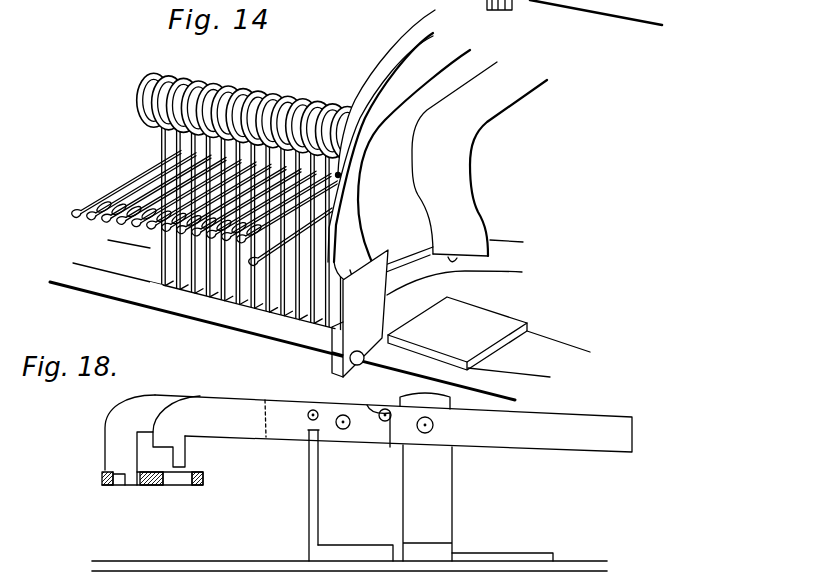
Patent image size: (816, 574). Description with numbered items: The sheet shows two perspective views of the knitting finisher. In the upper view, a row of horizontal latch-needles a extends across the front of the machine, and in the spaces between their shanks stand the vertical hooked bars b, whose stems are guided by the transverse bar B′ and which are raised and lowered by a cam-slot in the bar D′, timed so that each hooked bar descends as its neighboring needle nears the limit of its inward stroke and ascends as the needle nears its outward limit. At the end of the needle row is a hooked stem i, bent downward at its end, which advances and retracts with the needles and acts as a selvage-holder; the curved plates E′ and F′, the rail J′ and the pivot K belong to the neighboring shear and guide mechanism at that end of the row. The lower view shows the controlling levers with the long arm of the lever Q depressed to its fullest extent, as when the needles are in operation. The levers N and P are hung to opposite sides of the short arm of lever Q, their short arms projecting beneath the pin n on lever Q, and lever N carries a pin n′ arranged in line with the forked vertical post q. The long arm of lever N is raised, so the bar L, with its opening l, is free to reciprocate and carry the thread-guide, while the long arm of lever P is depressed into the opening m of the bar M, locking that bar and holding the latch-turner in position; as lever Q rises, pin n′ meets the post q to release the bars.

In FIG. 14, the vertical hooked bars b is at (241, 226).
In FIG. 14, the hooked stem i is at (209, 208).
In FIG. 14, the horizontal latch-needles a is at (178, 224).
In FIG. 14, the transverse bar B′ is at (118, 262).
In FIG. 14, the bar with cam-slot D′ is at (282, 341).
In FIG. 14, the curved lever E′ is at (399, 147).
In FIG. 14, the cam plate F′ is at (479, 162).
In FIG. 14, the guide rail and slab J′ is at (488, 324).
In FIG. 14, the pivot K is at (357, 358).
In FIG. 18, the lever P is at (152, 433).
In FIG. 18, the lever N is at (196, 436).
In FIG. 18, the pin n′ is at (303, 412).
In FIG. 18, the pin n is at (384, 414).
In FIG. 18, the lever Q is at (393, 422).
In FIG. 18, the vertical post q is at (305, 495).
In FIG. 18, the bar M is at (102, 477).
In FIG. 18, the opening m is at (118, 485).
In FIG. 18, the bar L is at (205, 480).
In FIG. 18, the opening l is at (178, 485).